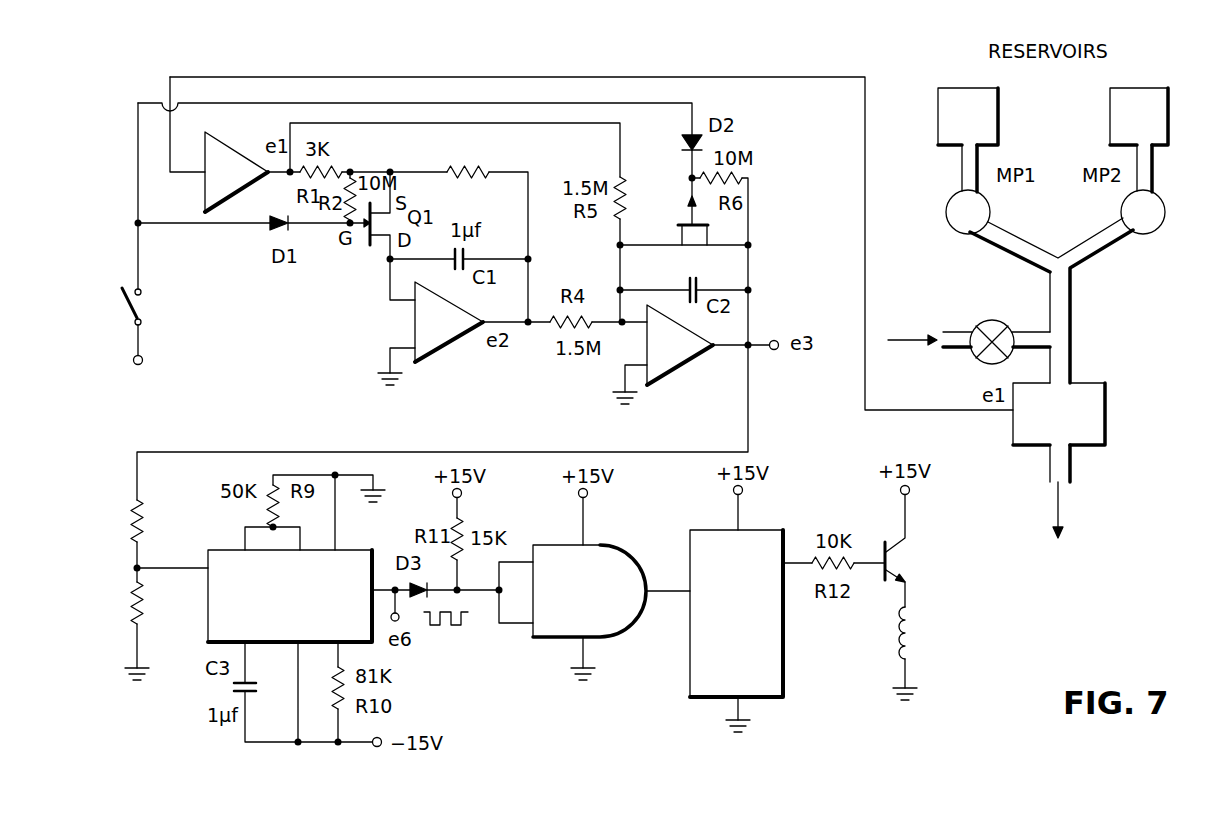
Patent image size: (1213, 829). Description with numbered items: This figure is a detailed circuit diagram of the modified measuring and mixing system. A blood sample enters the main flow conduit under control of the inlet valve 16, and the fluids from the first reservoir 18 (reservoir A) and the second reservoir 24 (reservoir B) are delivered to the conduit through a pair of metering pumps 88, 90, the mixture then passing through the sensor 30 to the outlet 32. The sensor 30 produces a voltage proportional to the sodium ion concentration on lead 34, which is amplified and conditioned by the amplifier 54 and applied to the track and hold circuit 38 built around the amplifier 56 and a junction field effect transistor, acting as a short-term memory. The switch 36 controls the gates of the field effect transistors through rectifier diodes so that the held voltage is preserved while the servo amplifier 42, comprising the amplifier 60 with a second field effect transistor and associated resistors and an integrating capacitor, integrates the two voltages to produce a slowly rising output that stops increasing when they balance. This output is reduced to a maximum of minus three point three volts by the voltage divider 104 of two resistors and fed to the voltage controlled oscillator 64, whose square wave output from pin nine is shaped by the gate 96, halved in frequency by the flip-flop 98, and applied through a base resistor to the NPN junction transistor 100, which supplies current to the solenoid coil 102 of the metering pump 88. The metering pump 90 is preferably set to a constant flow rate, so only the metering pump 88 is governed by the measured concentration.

The amplifier 54 is at (220, 152).
The track and hold circuit 38 is at (428, 138).
The servo amplifier 42 is at (770, 216).
The amplifier 56 is at (452, 328).
The amplifier 60 is at (686, 350).
The switch 36 is at (126, 309).
The lead 34 is at (865, 372).
The voltage divider 104 is at (110, 488).
The voltage controlled oscillator 64 is at (222, 610).
The gate 96 is at (612, 558).
The flip-flop 98 is at (775, 658).
The NPN junction transistor 100 is at (882, 542).
The coil 102 is at (902, 630).
The first reservoir 18 is at (981, 125).
The second reservoir 24 is at (1160, 122).
The metering pump 88 is at (962, 222).
The metering pump 90 is at (1148, 212).
The inlet valve 16 is at (980, 342).
The sensor 30 is at (1092, 397).
The outlet 32 is at (1072, 466).